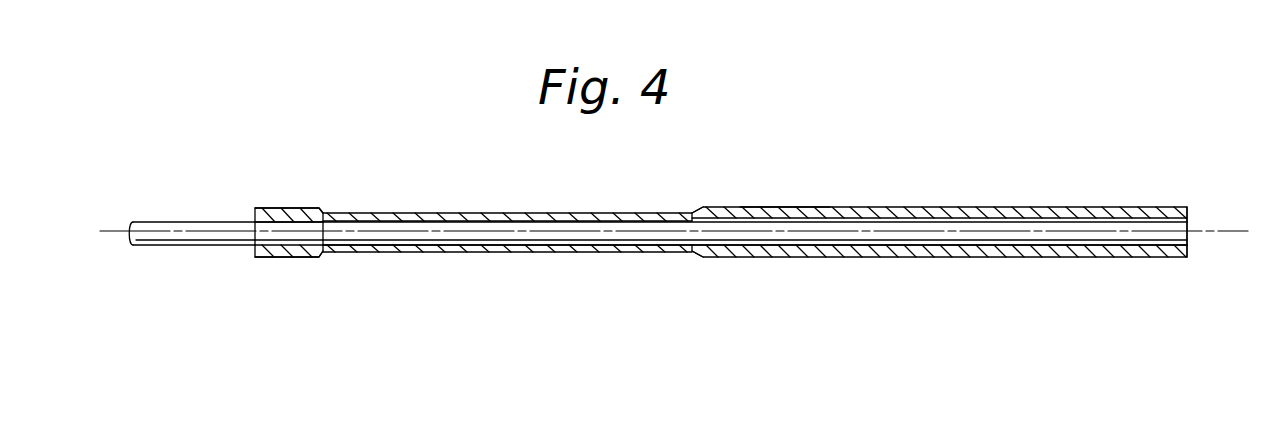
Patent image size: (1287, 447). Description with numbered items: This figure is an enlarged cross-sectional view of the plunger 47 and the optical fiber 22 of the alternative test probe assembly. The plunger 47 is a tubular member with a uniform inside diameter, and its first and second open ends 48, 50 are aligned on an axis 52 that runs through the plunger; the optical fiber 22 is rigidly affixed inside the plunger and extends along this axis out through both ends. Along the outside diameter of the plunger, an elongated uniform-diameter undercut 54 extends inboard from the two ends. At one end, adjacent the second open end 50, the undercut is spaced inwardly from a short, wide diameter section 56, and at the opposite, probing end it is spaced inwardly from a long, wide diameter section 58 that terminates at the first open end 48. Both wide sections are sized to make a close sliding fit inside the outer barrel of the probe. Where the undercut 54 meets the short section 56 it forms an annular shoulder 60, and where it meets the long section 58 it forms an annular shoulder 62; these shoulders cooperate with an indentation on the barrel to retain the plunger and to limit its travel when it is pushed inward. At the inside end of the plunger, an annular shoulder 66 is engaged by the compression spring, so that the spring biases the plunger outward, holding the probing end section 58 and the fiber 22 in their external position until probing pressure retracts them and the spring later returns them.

The optical fiber 22 is at (153, 224).
The plunger 47 is at (786, 196).
The first open end 48 is at (1188, 220).
The second open end 50 is at (257, 233).
The axis 52 is at (427, 234).
The undercut 54 is at (565, 155).
The short, wide diameter section 56 is at (298, 209).
The long, wide diameter section 58 is at (988, 258).
The annular shoulder 60 is at (326, 257).
The annular shoulder 62 is at (692, 209).
The annular shoulder 66 is at (254, 216).